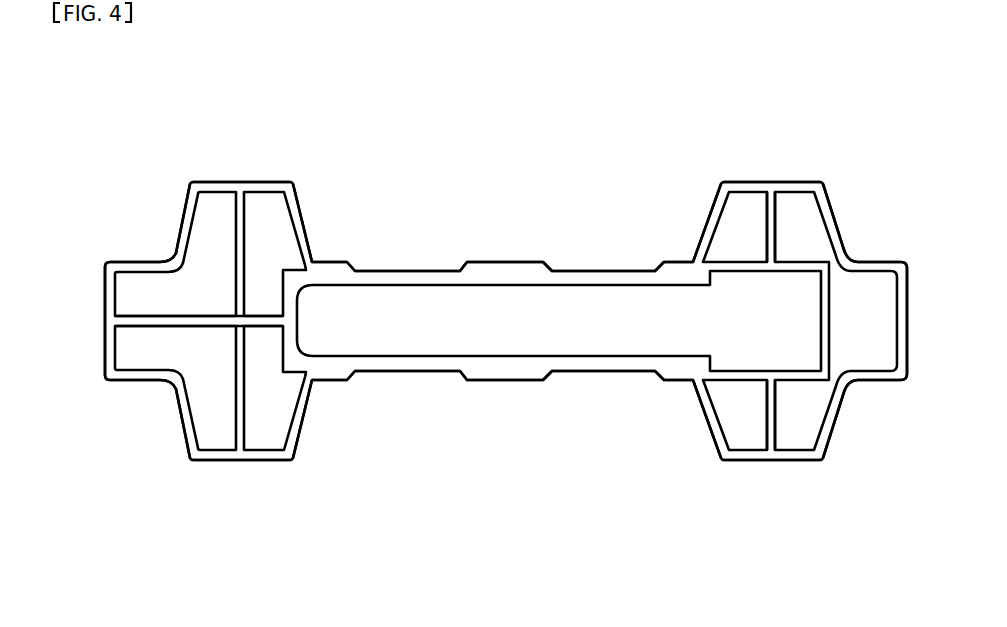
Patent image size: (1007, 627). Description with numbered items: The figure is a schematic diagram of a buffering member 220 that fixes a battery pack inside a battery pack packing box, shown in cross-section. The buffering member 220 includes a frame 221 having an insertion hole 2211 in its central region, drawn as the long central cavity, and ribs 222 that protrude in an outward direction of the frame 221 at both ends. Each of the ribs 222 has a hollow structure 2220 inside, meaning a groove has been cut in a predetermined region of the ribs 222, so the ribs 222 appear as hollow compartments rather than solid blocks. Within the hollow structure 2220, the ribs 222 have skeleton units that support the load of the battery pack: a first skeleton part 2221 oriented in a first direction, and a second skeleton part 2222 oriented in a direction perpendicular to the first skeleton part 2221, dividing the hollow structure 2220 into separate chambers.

The buffering member 220 is at (113, 106).
The frame 221 is at (497, 268).
The insertion hole 2211 is at (596, 310).
The ribs 222 is at (271, 462).
The hollow structure 2220 is at (272, 207).
The first skeleton part 2221 is at (133, 320).
The second skeleton part 2222 is at (774, 219).